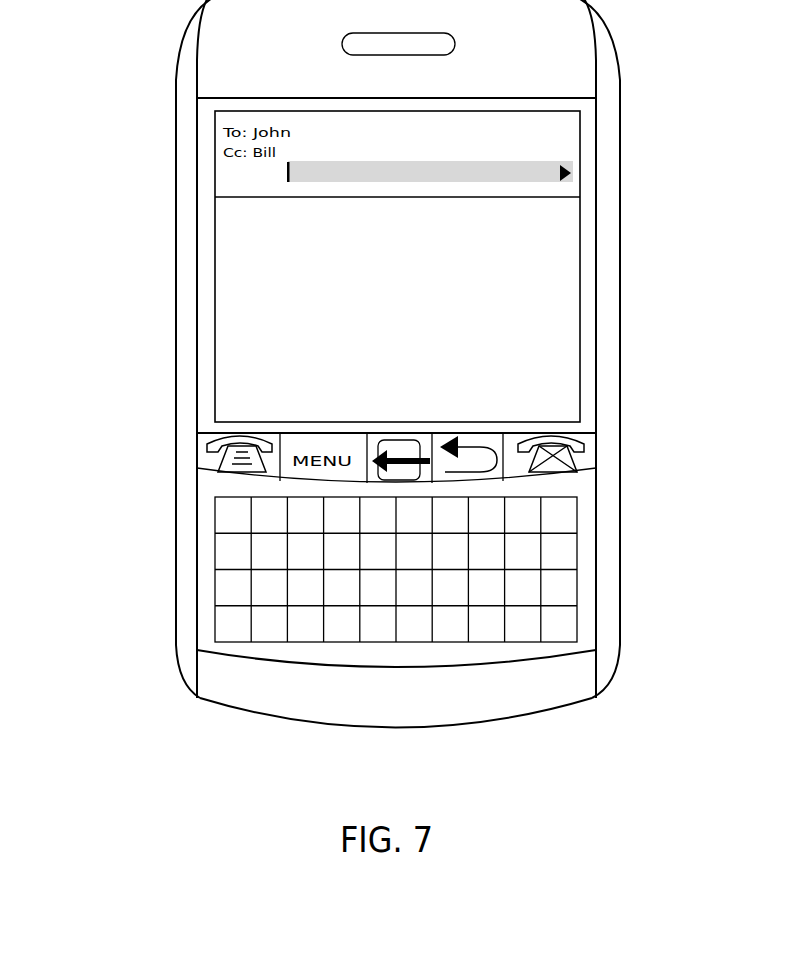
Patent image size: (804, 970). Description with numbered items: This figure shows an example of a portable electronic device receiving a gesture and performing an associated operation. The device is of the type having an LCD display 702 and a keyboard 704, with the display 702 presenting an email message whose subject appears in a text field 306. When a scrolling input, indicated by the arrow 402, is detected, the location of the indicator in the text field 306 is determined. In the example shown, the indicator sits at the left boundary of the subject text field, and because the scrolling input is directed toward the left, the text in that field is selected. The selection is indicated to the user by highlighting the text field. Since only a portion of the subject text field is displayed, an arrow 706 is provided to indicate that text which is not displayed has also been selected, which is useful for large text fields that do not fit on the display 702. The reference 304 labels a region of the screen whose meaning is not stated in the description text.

The subject field 304 is at (285, 171).
The text field 306 is at (291, 167).
The arrow 706 is at (571, 173).
The LCD display 702 is at (557, 297).
The keyboard 704 is at (222, 521).
The arrow 402 is at (420, 465).